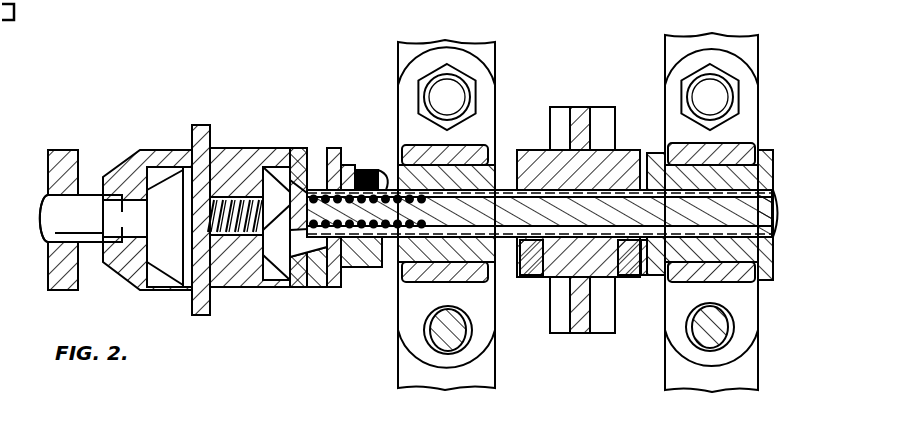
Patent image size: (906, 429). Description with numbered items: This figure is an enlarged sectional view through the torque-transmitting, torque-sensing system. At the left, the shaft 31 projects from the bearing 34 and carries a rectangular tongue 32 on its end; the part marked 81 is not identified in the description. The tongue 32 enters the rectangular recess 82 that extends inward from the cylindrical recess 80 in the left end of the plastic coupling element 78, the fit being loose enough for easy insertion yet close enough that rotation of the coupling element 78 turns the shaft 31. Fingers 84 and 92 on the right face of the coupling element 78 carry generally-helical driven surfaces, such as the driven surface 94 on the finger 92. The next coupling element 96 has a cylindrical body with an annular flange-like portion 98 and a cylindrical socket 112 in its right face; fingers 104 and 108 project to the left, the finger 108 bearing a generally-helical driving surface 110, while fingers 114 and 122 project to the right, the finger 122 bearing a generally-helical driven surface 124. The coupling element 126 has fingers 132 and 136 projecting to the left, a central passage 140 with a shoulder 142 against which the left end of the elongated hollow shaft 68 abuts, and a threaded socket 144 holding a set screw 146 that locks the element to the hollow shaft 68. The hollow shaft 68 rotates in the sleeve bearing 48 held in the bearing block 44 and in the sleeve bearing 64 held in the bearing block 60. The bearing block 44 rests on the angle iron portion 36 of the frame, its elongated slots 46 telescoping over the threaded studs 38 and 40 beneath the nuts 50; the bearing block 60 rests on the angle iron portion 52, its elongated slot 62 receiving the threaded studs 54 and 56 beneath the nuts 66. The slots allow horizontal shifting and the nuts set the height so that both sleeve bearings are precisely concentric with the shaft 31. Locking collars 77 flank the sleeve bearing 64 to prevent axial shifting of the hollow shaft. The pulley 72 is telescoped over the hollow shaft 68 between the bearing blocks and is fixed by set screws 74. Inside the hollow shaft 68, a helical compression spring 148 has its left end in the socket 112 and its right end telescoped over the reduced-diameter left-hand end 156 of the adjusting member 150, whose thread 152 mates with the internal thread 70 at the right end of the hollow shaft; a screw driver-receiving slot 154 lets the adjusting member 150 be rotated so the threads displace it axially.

The shaft 31 is at (30, 210).
The tongue 32 is at (108, 244).
The bearing 34 is at (66, 292).
The angle iron portion 36 is at (468, 45).
The threaded stud 38 is at (465, 96).
The threaded stud 40 is at (433, 342).
The bearing block 44 is at (425, 283).
The elongated slots 46 is at (453, 352).
The sleeve bearing 48 is at (500, 145).
The nuts 50 is at (427, 78).
The angle iron portion 52 is at (672, 42).
The threaded stud 54 is at (700, 80).
The threaded stud 56 is at (690, 350).
The bearing block 60 is at (740, 150).
The elongated slots 62 is at (700, 390).
The sleeve bearing 64 is at (700, 295).
The nuts 66 is at (710, 86).
The elongated hollow shaft 68 is at (530, 270).
The internal thread 70 is at (765, 246).
The pulley 72 is at (580, 335).
The set screws 74 is at (560, 320).
The locking collars 77 is at (655, 152).
The coupling element 78 is at (147, 143).
The cylindrical recess 80 is at (92, 195).
The input shaft end 81 is at (52, 210).
The rectangular recess 82 is at (136, 272).
The finger 84 is at (168, 165).
The finger 92 is at (173, 292).
The generally-helical driven surface 94 is at (153, 287).
The coupling element 96 is at (248, 143).
The flange-like portion 98 is at (207, 125).
The finger 104 is at (198, 300).
The finger 108 is at (224, 160).
The generally-helical driving surface 110 is at (198, 126).
The cylindrical socket 112 is at (237, 238).
The finger 114 is at (296, 150).
The finger 122 is at (278, 283).
The generally-helical driven surface 124 is at (268, 168).
The coupling element 126 is at (333, 145).
The finger 132 is at (300, 290).
The finger 136 is at (352, 168).
The passage 140 is at (360, 240).
The shoulder 142 is at (352, 268).
The threaded socket 144 is at (382, 172).
The set screw 146 is at (366, 171).
The helical compression spring 148 is at (252, 238).
The adjusting member 150 is at (510, 200).
The thread 152 is at (650, 278).
The screw driver-receiving slot 154 is at (778, 282).
The reduced-diameter left-hand end 156 is at (322, 232).